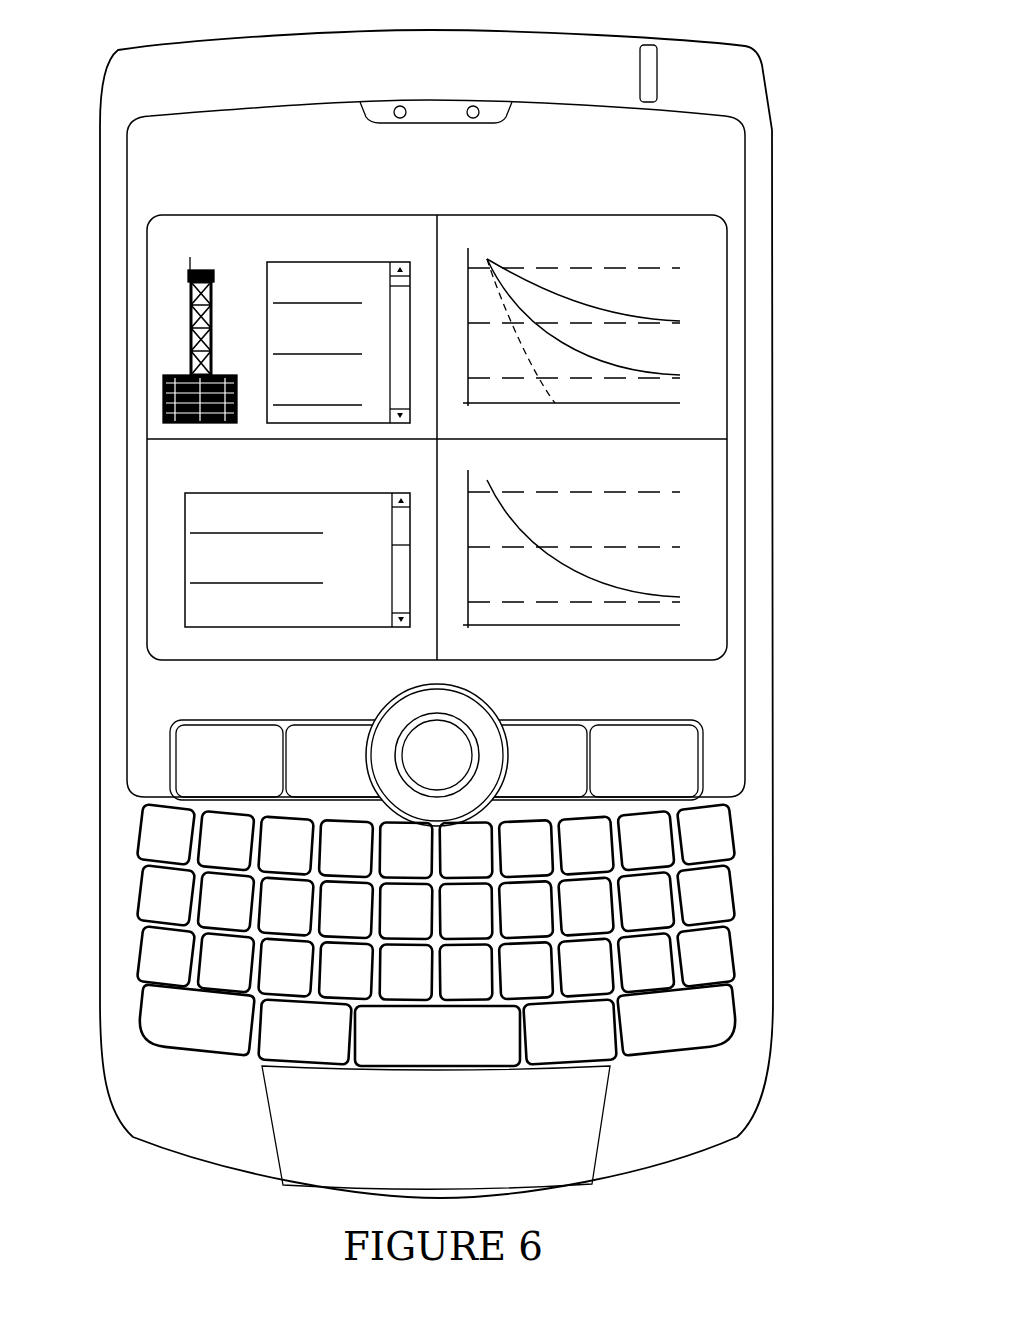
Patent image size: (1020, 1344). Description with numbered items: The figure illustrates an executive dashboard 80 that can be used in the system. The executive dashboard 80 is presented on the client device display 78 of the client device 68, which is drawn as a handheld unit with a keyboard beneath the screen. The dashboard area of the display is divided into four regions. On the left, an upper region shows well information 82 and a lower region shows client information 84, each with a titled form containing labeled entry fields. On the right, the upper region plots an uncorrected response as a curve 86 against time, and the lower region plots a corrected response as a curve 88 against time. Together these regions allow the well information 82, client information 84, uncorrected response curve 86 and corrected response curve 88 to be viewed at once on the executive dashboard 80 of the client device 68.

The client device 68 is at (118, 50).
The client device display 78 is at (705, 662).
The executive dashboard 80 is at (613, 214).
The well information 82 is at (157, 240).
The client information 84 is at (160, 462).
The uncorrected response curve 86 is at (713, 240).
The corrected response curve 88 is at (713, 462).